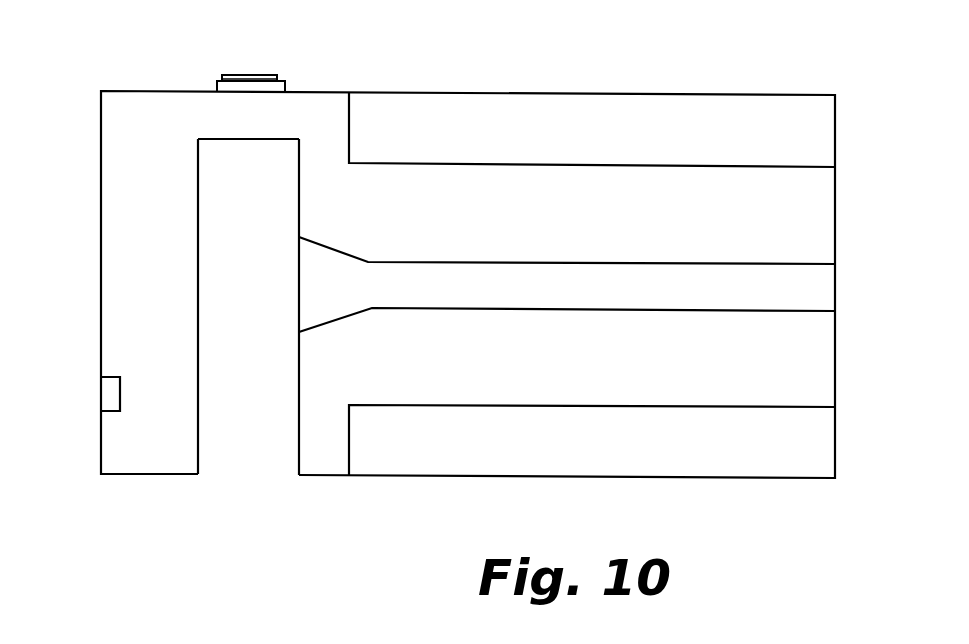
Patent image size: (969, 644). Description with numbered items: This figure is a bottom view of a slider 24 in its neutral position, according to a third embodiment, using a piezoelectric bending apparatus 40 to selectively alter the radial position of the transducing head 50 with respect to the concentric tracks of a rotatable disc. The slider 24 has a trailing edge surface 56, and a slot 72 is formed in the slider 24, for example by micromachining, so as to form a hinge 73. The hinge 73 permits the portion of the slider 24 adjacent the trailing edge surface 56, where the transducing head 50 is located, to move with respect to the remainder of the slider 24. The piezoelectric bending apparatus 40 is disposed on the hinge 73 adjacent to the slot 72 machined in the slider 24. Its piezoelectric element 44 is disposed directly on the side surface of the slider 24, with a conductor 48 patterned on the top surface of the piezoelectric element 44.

The slider 24 is at (750, 478).
The piezoelectric bending apparatus 40 is at (252, 61).
The piezoelectric element 44 is at (288, 83).
The conductor 48 is at (277, 75).
The transducing head 50 is at (101, 392).
The trailing edge surface 56 is at (101, 222).
The slot 72 is at (247, 425).
The hinge 73 is at (219, 139).